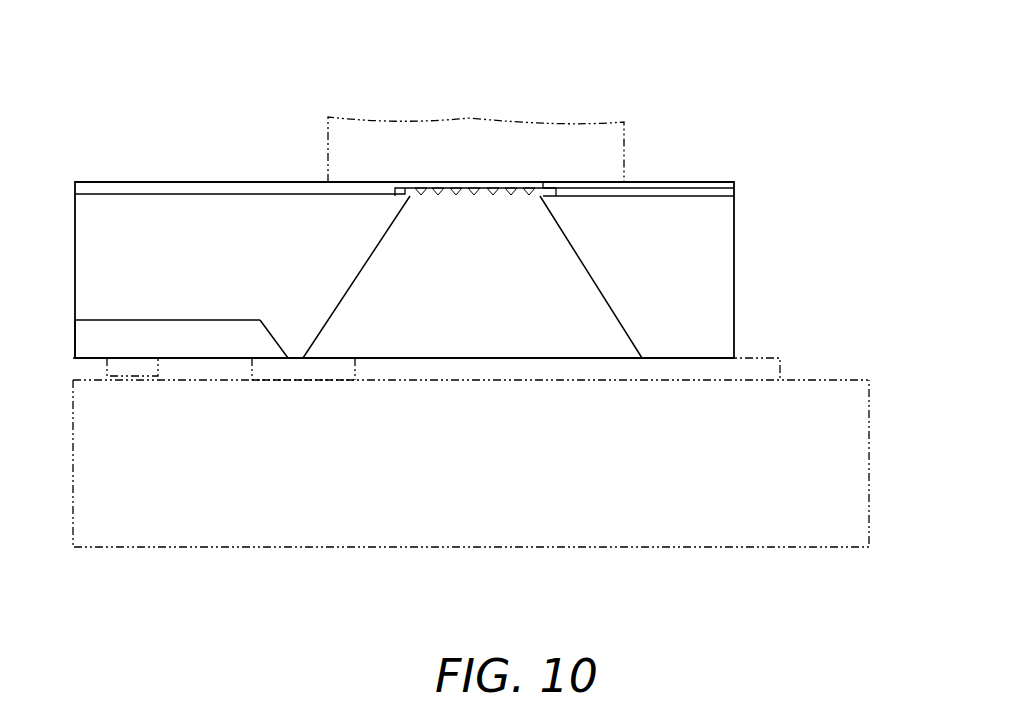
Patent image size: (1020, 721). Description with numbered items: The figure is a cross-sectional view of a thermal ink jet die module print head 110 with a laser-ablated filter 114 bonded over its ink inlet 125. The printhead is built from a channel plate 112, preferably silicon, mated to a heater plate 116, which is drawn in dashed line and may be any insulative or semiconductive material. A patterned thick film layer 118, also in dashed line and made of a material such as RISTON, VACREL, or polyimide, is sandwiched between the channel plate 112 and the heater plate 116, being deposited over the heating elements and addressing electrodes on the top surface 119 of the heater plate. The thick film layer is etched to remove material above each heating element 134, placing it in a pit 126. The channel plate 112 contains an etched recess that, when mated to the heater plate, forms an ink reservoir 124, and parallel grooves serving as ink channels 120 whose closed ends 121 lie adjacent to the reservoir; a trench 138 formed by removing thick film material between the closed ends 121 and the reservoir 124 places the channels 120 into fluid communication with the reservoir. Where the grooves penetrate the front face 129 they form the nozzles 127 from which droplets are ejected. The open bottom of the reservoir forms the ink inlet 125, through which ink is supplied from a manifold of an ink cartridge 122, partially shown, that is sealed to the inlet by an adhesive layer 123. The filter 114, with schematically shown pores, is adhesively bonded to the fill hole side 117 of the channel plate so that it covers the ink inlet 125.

The die module print head 110 is at (260, 60).
The channel plate 112 is at (738, 245).
The laser ablated filter 114 is at (458, 183).
The heater plate 116 is at (702, 528).
The fill hole side 117 is at (698, 196).
The patterned thick film layer 118 is at (782, 360).
The top surface 119 is at (823, 383).
The ink channels 120 is at (190, 324).
The closed ends 121 is at (266, 334).
The ink cartridge 122 is at (626, 130).
The adhesive layer 123 is at (288, 181).
The reservoir 124 is at (500, 285).
The ink inlet 125 is at (481, 199).
The pits 126 is at (126, 360).
The nozzles 127 is at (73, 337).
The front face 129 is at (73, 215).
The heating element 134 is at (130, 378).
The trench 138 is at (312, 378).